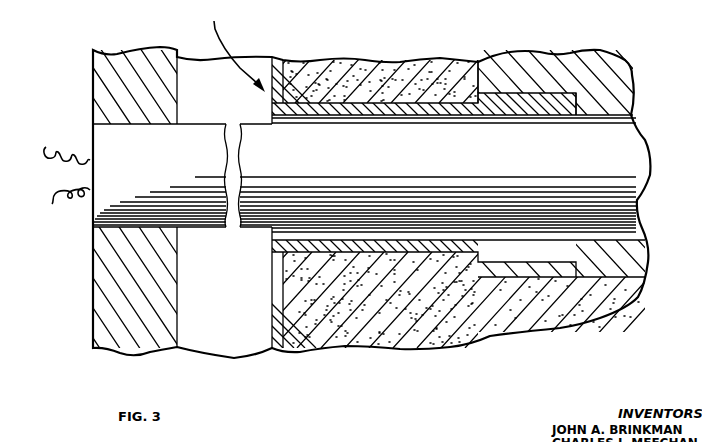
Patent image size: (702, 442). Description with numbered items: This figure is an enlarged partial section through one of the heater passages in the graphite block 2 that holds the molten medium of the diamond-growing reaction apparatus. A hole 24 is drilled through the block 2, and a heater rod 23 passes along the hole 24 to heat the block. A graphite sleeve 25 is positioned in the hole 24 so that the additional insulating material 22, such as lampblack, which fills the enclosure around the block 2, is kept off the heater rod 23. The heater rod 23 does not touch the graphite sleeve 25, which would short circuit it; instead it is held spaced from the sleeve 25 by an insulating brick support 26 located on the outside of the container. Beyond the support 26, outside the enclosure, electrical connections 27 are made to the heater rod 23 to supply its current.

The graphite block 2 is at (621, 80).
The additional insulating material 22 is at (386, 65).
The heater rods 23 is at (628, 182).
The holes 24 is at (631, 239).
The graphite sleeves 25 is at (523, 108).
The insulating brick supports 26 is at (125, 290).
The electrical connections 27 is at (52, 204).